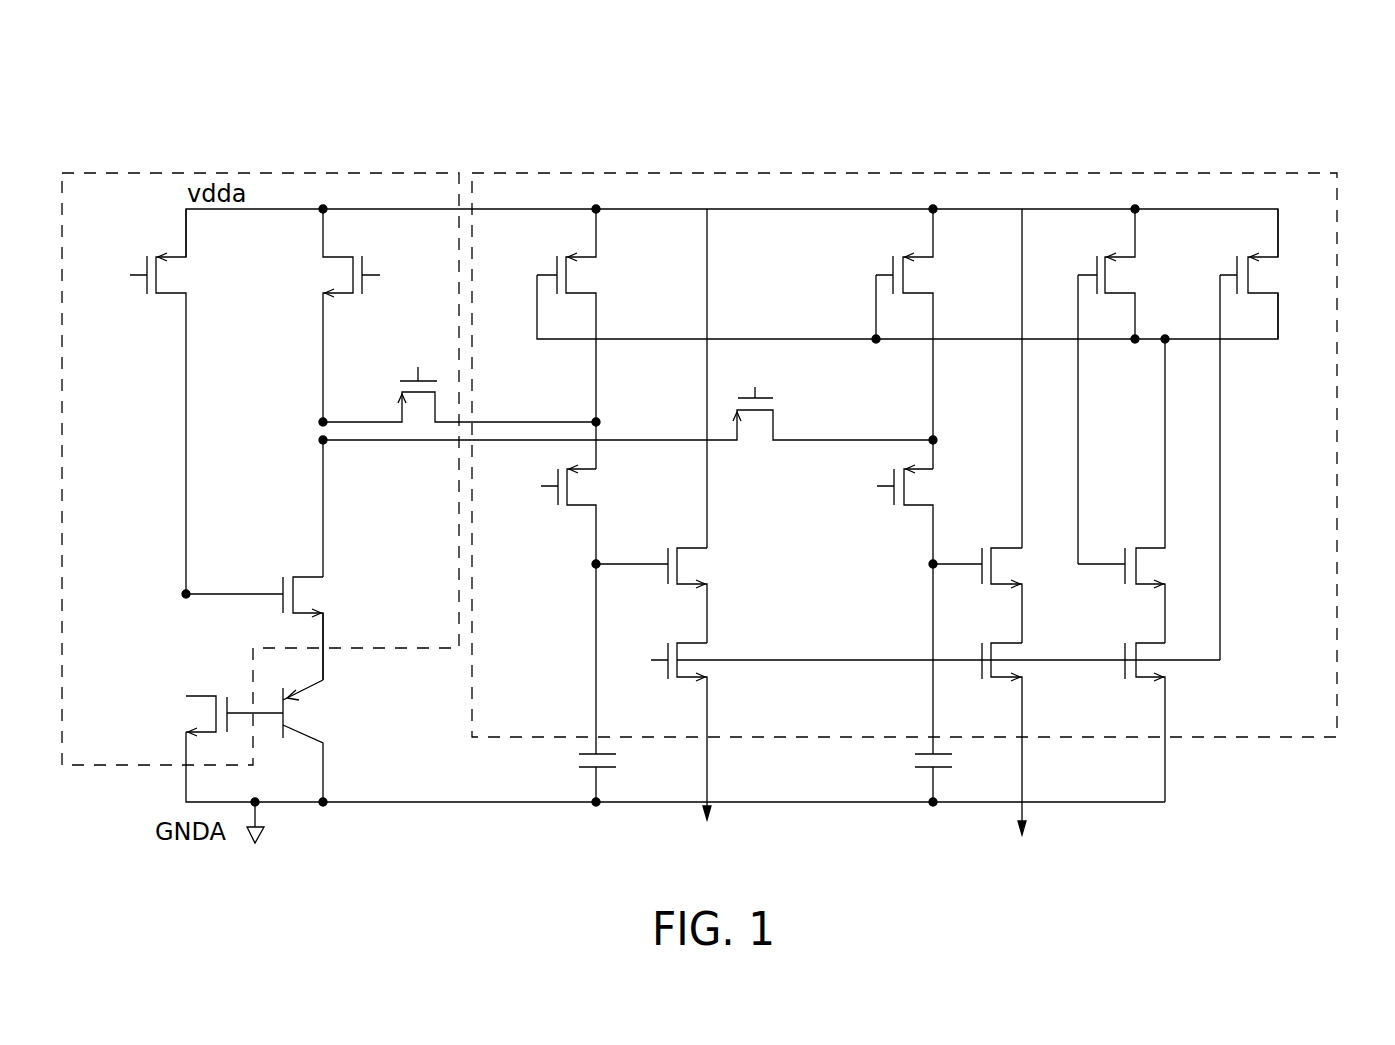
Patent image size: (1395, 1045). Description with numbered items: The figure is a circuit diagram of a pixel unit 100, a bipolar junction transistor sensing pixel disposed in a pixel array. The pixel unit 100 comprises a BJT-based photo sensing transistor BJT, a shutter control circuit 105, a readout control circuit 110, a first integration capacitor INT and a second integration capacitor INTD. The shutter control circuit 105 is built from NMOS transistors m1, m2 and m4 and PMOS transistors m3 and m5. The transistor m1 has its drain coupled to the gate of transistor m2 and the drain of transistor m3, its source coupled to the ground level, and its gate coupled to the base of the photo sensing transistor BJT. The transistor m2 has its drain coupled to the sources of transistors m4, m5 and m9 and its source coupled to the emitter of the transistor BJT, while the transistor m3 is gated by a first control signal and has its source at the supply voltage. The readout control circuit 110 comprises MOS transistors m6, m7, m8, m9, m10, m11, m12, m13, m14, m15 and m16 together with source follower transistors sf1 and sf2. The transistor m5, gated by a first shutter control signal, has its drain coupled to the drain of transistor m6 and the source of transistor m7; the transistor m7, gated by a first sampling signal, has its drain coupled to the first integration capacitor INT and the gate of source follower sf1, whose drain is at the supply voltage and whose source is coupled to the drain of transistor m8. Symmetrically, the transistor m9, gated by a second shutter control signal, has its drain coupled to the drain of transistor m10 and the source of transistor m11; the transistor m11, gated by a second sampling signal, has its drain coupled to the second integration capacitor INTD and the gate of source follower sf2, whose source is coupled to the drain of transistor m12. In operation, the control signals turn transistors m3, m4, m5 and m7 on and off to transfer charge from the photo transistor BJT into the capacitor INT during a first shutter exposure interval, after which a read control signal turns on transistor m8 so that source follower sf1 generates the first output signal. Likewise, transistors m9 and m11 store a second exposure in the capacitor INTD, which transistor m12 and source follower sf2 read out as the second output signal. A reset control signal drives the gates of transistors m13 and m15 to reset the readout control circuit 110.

The pixel unit 100 is at (1259, 95).
The shutter control circuit 105 is at (258, 173).
The readout control circuit 110 is at (901, 173).
The transistor m1 is at (218, 716).
The transistor m2 is at (272, 628).
The transistor m3 is at (147, 401).
The transistor m4 is at (363, 315).
The transistor m5 is at (398, 405).
The transistor m6 is at (907, 339).
The transistor m7 is at (559, 609).
The transistor m8 is at (690, 682).
The transistor m9 is at (628, 414).
The transistor m10 is at (931, 339).
The transistor m11 is at (904, 609).
The transistor m12 is at (1001, 683).
The transistor m13 is at (1111, 386).
The transistor m14 is at (1275, 434).
The transistor m15 is at (1148, 491).
The transistor m16 is at (1145, 683).
The source follower transistor sf1 is at (667, 595).
The source follower transistor sf2 is at (992, 595).
The BJT-based photo sensing transistor BJT is at (322, 707).
The first integration capacitor INT is at (570, 776).
The second integration capacitor INTD is at (897, 776).